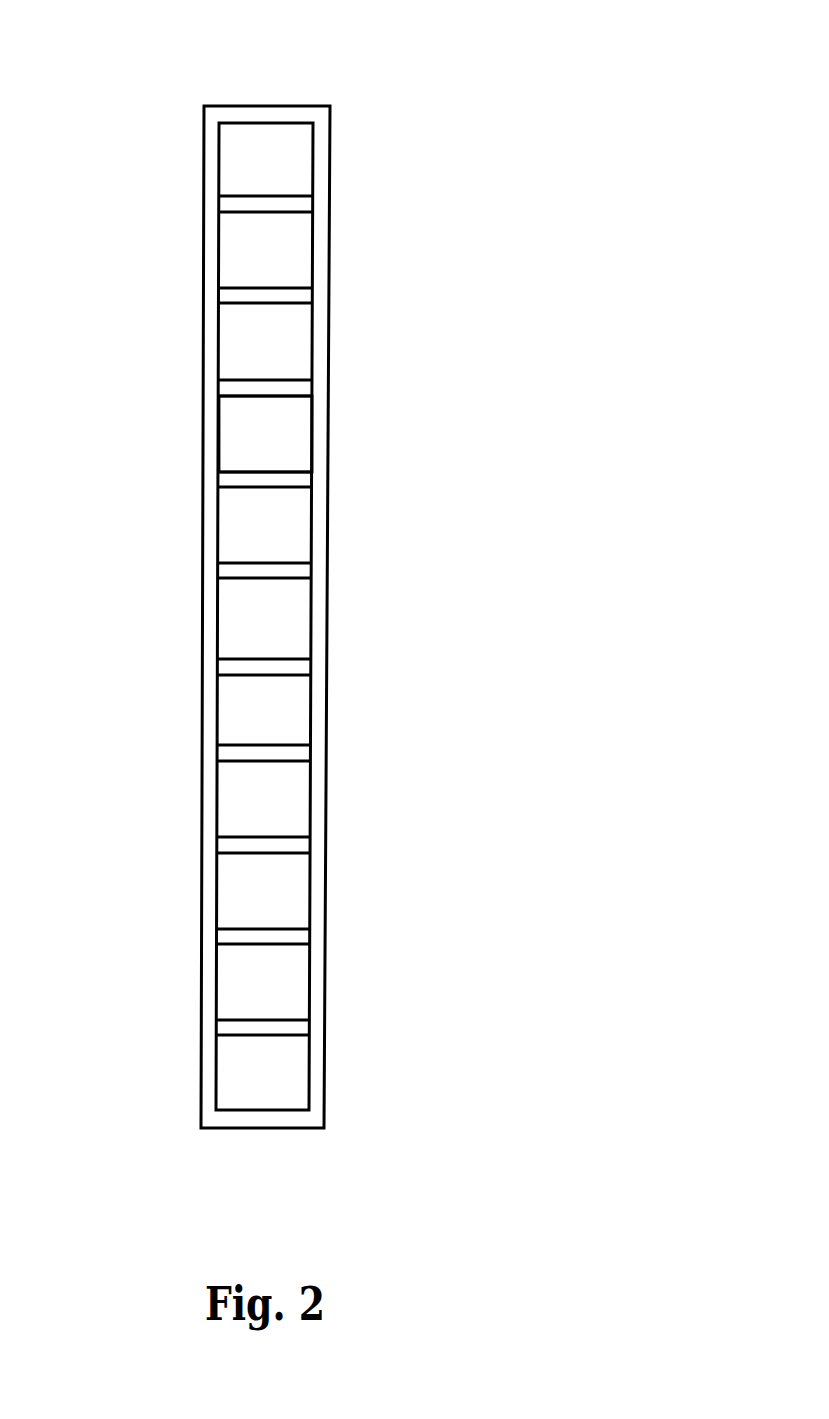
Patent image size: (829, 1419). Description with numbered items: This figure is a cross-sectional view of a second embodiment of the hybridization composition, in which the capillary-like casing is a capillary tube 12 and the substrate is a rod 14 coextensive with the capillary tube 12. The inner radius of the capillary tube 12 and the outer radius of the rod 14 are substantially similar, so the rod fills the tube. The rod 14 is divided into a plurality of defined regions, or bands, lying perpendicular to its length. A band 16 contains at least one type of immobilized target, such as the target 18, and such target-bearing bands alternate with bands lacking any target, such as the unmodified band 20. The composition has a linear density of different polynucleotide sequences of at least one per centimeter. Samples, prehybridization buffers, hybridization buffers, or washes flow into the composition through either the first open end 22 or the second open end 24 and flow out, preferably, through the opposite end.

The capillary tube 12 is at (345, 305).
The rod 14 is at (205, 412).
The band 16 is at (287, 450).
The target 18 is at (295, 533).
The unmodified band 20 is at (302, 667).
The first open end 22 is at (273, 75).
The second open end 24 is at (253, 1158).